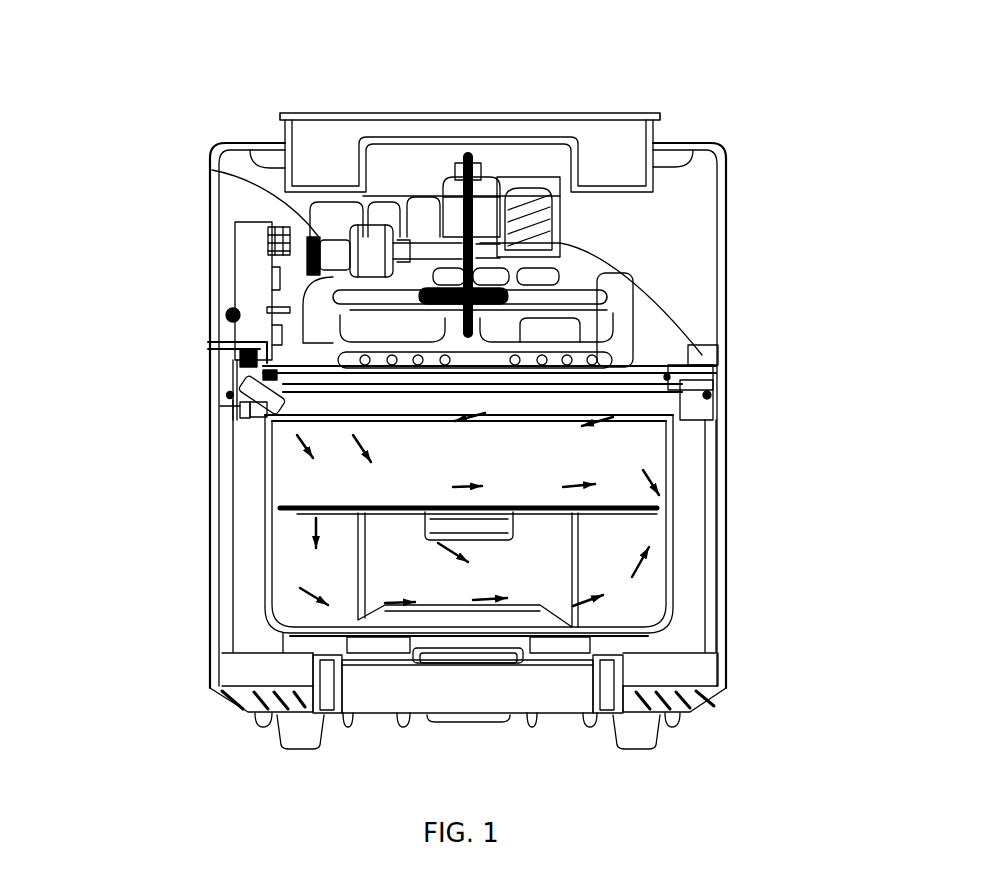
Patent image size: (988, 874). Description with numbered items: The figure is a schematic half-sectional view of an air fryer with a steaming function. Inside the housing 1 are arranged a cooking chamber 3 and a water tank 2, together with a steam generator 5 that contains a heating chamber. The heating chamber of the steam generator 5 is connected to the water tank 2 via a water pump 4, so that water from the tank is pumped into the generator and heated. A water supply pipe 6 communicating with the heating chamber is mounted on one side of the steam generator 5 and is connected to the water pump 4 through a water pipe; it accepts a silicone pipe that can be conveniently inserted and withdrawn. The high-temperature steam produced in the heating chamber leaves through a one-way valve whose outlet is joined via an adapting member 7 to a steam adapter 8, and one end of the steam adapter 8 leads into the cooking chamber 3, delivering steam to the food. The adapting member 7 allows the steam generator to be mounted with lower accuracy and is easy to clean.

The housing 1 is at (730, 312).
The water tank 2 is at (332, 142).
The cooking chamber 3 is at (330, 468).
The water pump 4 is at (318, 230).
The steam generator 5 is at (250, 263).
The water supply pipe 6 is at (231, 311).
The adapting member 7 is at (212, 354).
The steam adapter 8 is at (213, 393).